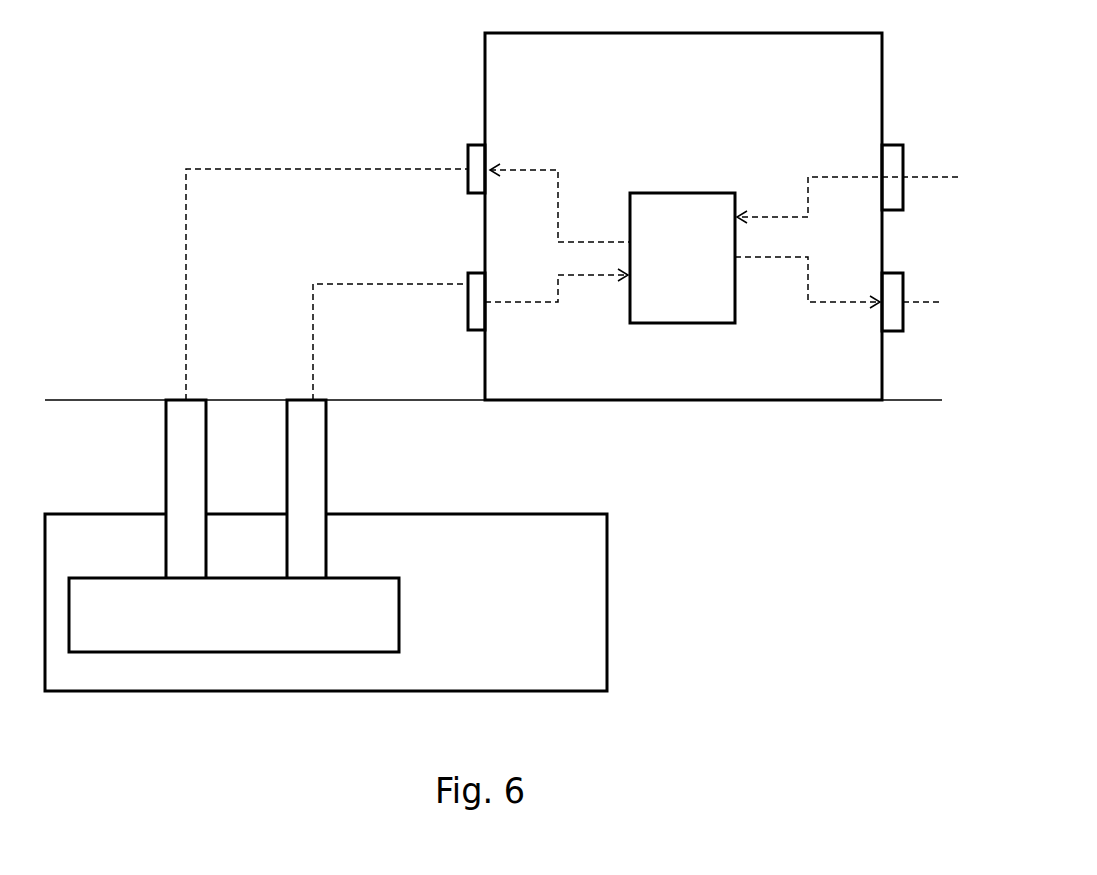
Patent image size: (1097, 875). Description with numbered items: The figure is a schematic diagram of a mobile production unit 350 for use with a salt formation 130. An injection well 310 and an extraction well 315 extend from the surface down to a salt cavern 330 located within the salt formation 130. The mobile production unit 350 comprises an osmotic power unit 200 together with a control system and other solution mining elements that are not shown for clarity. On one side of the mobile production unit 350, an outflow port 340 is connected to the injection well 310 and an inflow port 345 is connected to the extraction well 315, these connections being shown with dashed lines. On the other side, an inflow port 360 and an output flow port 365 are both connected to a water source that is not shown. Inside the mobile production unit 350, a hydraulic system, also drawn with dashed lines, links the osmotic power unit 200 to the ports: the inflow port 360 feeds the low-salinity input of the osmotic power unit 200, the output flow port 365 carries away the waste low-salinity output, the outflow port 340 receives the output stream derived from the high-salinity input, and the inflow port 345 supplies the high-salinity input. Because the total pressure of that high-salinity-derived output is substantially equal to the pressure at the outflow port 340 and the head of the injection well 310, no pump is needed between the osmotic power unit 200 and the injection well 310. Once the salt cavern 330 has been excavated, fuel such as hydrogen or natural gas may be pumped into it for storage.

The mobile production unit 350 is at (572, 107).
The osmotic power unit 200 is at (706, 277).
The outflow port 340 is at (472, 158).
The inflow port 345 is at (477, 305).
The inflow port 360 is at (888, 162).
The output flow port 365 is at (897, 305).
The salt formation 130 is at (532, 565).
The salt cavern 330 is at (268, 638).
The injection well 310 is at (182, 492).
The extraction well 315 is at (307, 503).